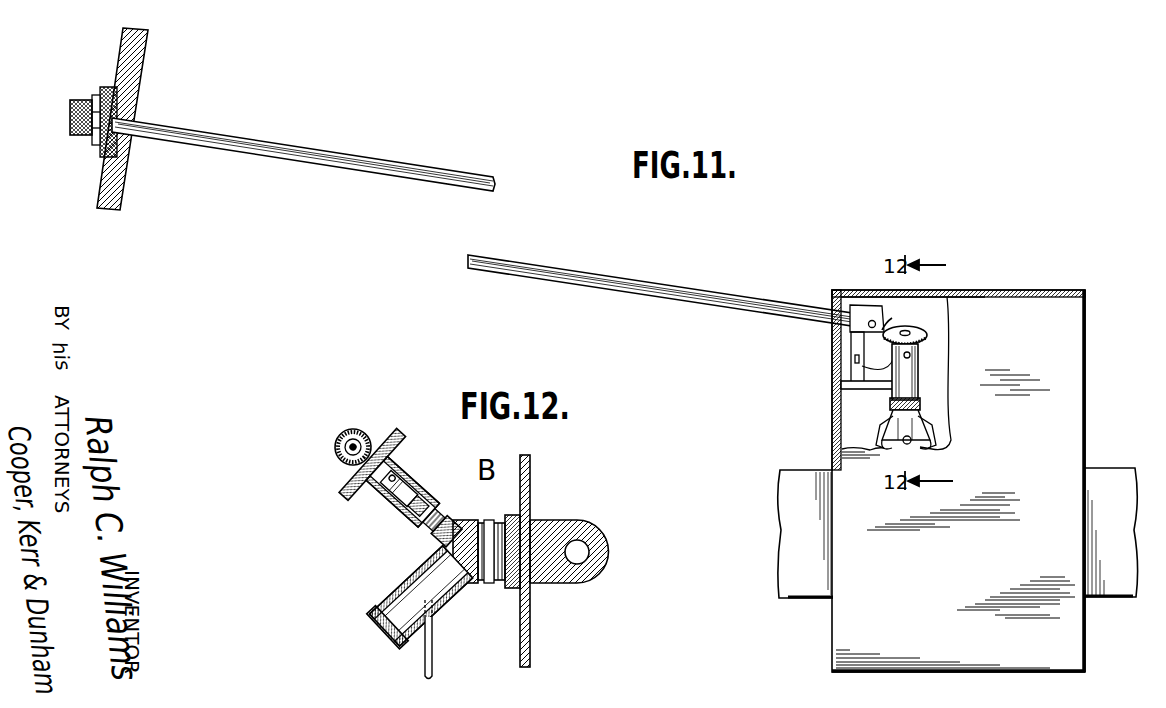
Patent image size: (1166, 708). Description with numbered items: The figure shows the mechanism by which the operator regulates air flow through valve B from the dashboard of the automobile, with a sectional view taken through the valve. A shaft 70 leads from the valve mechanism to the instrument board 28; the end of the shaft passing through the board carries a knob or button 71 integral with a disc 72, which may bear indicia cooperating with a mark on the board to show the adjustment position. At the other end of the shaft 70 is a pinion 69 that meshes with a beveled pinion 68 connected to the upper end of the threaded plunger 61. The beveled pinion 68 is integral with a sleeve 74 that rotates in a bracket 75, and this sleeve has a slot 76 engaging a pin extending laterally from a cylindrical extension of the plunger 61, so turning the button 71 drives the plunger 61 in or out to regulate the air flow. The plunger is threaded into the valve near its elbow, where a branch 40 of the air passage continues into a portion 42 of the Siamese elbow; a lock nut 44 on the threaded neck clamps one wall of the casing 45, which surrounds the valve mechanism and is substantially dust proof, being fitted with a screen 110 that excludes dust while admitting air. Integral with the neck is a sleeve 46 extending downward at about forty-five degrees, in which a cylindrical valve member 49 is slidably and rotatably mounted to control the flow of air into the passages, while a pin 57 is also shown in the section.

In FIG. 11, the instrument board 28 is at (133, 80).
In FIG. 11, the knob or button 71 is at (70, 126).
In FIG. 11, the disc 72 is at (100, 155).
In FIG. 11, the shaft 70 is at (422, 172).
In FIG. 12, the shaft 70 is at (321, 451).
In FIG. 11, the casing 45 is at (1086, 383).
In FIG. 12, the casing 45 is at (531, 478).
In FIG. 11, the screen 110 is at (986, 291).
In FIG. 11, the beveled pinion 68 is at (918, 331).
In FIG. 12, the beveled pinion 68 is at (385, 445).
In FIG. 11, the pinion 69 is at (882, 330).
In FIG. 12, the pinion 69 is at (355, 431).
In FIG. 11, the bracket 75 is at (919, 374).
In FIG. 12, the bracket 75 is at (385, 511).
In FIG. 12, the sleeve 74 is at (415, 466).
In FIG. 12, the slot 76 is at (428, 481).
In FIG. 11, the threaded plunger 61 is at (890, 405).
In FIG. 12, the threaded plunger 61 is at (459, 512).
In FIG. 12, the portion of the Siamese elbow 42 is at (550, 527).
In FIG. 12, the lock nut 44 is at (511, 589).
In FIG. 12, the air passage branch 40 is at (584, 557).
In FIG. 11, the sleeve 46 is at (920, 443).
In FIG. 12, the sleeve 46 is at (406, 580).
In FIG. 12, the cylindrical valve member 49 is at (376, 643).
In FIG. 12, the pin 57 is at (433, 661).